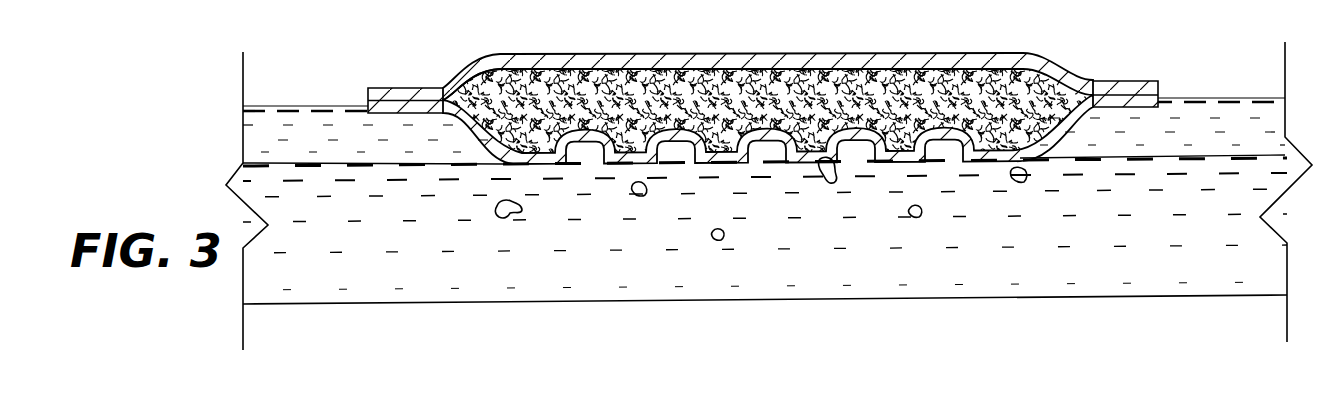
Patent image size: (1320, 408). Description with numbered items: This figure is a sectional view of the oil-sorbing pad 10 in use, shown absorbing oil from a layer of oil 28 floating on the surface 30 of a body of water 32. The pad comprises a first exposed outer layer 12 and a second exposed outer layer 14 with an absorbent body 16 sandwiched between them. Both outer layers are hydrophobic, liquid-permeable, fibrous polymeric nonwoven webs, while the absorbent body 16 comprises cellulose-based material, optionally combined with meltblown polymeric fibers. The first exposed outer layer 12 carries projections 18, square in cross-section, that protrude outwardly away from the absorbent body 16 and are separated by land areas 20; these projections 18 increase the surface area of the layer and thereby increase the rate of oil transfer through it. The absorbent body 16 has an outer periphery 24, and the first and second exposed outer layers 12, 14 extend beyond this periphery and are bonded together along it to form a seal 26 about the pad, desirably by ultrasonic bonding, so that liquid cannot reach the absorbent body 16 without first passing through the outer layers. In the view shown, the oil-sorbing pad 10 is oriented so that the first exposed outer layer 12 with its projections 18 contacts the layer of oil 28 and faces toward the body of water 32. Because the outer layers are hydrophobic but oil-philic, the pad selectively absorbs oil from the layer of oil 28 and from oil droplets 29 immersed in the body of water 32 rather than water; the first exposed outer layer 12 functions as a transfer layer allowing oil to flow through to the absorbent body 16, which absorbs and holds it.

The oil-sorbing pad 10 is at (774, 136).
The first exposed outer layer 12 is at (472, 132).
The second exposed outer layer 14 is at (733, 53).
The absorbent body 16 is at (893, 93).
The projections 18 is at (630, 167).
The land areas 20 is at (677, 143).
The outer periphery 24 is at (441, 92).
The seal 26 is at (404, 88).
The layer of oil 28 is at (277, 112).
The oil droplets 29 is at (505, 219).
The surface 30 is at (367, 164).
The body of water 32 is at (373, 280).